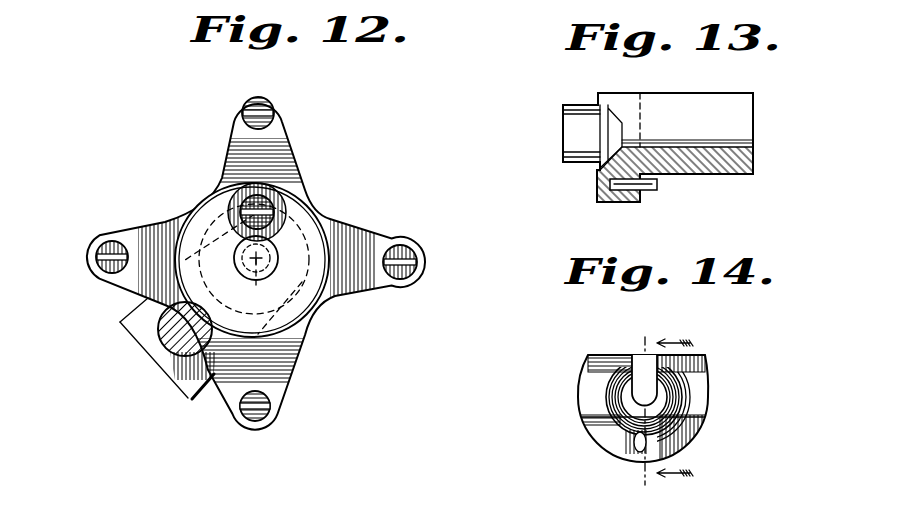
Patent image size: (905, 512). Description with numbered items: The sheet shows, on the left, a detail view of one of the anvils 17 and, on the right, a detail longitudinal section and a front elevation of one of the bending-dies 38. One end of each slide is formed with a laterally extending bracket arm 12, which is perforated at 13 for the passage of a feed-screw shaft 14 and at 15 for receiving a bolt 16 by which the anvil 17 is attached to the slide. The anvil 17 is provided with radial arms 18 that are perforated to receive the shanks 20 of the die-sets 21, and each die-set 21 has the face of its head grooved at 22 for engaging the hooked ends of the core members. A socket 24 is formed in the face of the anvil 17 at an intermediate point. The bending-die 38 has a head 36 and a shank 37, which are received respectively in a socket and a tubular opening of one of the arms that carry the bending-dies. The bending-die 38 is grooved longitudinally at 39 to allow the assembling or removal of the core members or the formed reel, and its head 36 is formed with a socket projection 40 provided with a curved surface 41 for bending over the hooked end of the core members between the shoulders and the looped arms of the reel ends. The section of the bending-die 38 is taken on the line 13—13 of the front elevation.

In FIG. 12, the bracket arm 12 is at (256, 268).
In FIG. 14, the perforation 13 is at (660, 409).
In FIG. 12, the feed-screw shaft 14 is at (172, 340).
In FIG. 12, the perforation 15 is at (256, 284).
In FIG. 12, the bolt 16 is at (242, 258).
In FIG. 12, the anvil 17 is at (307, 306).
In FIG. 12, the radial arm 18 is at (293, 145).
In FIG. 12, the shank 20 is at (418, 271).
In FIG. 12, the die-set 21 is at (266, 103).
In FIG. 12, the groove 22 is at (242, 114).
In FIG. 12, the socket 24 is at (222, 177).
In FIG. 13, the head 36 is at (606, 205).
In FIG. 14, the head 36 is at (704, 420).
In FIG. 13, the shank 37 is at (754, 160).
In FIG. 13, the bending-die 38 is at (698, 173).
In FIG. 14, the bending-die 38 is at (604, 432).
In FIG. 13, the longitudinal groove 39 is at (703, 102).
In FIG. 14, the longitudinal groove 39 is at (640, 378).
In FIG. 13, the socket projection 40 is at (580, 143).
In FIG. 14, the socket projection 40 is at (620, 400).
In FIG. 14, the curved surface 41 is at (690, 392).